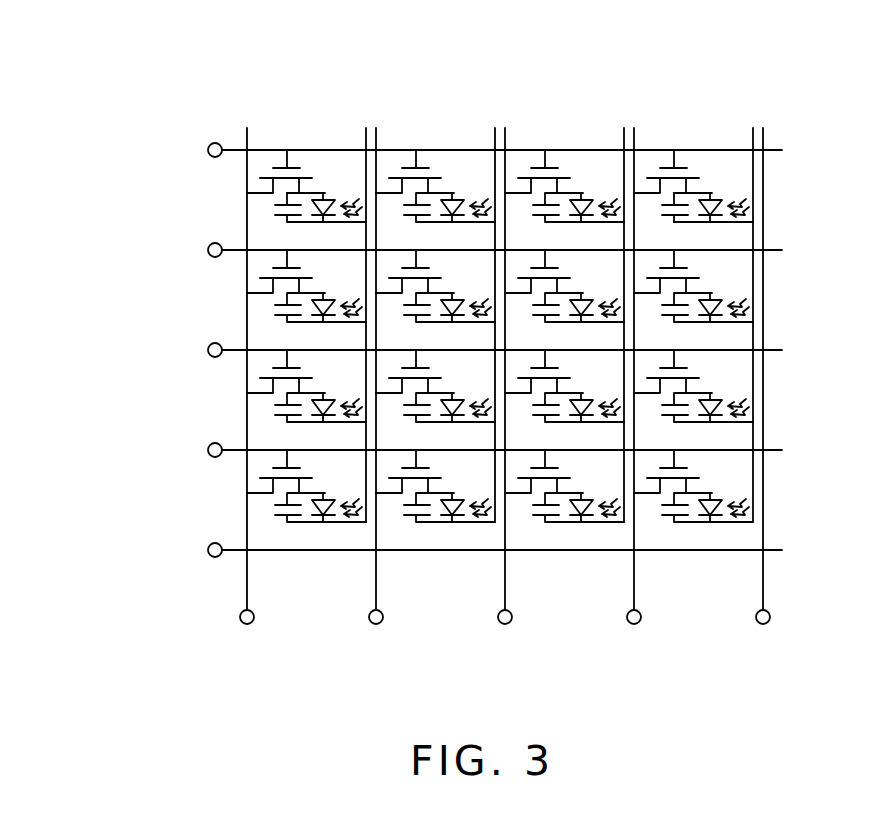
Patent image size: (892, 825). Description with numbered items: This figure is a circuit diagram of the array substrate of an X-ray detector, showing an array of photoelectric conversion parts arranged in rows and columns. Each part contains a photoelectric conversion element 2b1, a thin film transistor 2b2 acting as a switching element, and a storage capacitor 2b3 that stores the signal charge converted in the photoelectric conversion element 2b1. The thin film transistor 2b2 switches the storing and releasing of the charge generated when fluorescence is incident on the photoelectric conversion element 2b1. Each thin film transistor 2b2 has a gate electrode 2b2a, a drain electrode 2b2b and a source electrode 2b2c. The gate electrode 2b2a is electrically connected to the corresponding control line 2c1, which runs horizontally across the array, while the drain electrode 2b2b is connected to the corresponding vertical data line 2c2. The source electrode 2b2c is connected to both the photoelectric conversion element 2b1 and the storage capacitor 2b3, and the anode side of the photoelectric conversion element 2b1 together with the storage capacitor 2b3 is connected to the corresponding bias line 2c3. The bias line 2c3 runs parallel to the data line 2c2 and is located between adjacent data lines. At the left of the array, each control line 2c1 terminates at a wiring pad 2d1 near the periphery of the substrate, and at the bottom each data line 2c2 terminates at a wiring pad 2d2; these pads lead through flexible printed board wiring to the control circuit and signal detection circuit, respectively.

The photoelectric conversion element 2b1 is at (722, 181).
The thin film transistor 2b2 is at (689, 156).
The gate electrode 2b2a is at (294, 149).
The drain electrode 2b2b is at (247, 179).
The source electrode 2b2c is at (320, 177).
The storage capacitor 2b3 is at (649, 204).
The control line 2c1 is at (237, 546).
The data line 2c2 is at (635, 586).
The bias line 2c3 is at (493, 128).
The wiring pad 2d1 is at (203, 551).
The wiring pad 2d2 is at (627, 616).